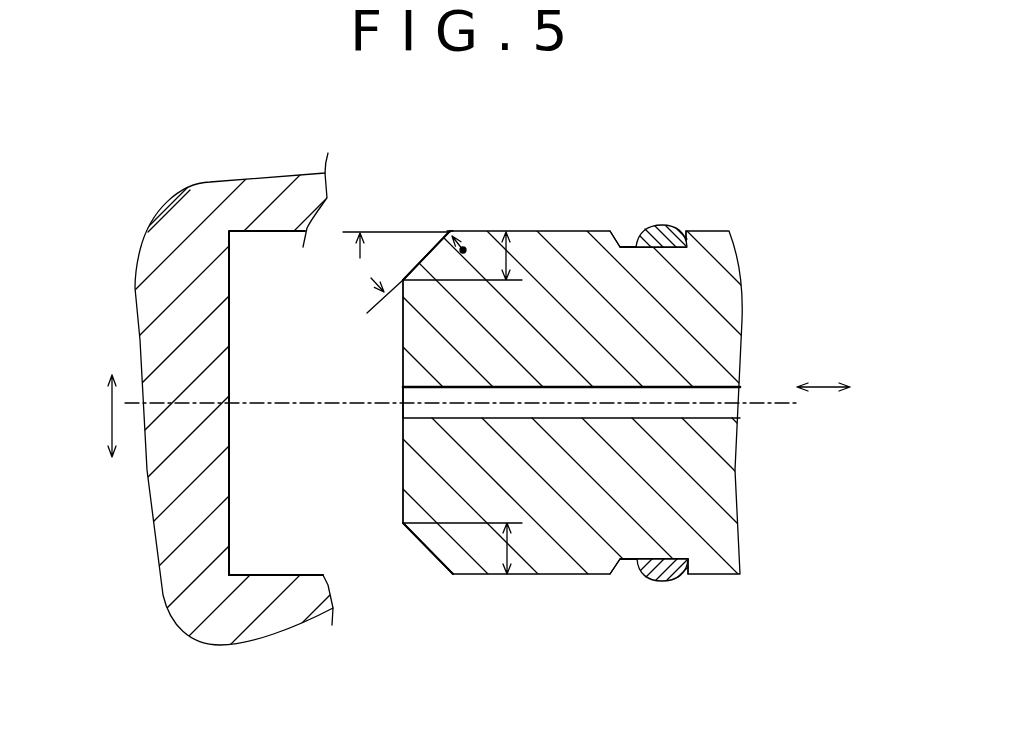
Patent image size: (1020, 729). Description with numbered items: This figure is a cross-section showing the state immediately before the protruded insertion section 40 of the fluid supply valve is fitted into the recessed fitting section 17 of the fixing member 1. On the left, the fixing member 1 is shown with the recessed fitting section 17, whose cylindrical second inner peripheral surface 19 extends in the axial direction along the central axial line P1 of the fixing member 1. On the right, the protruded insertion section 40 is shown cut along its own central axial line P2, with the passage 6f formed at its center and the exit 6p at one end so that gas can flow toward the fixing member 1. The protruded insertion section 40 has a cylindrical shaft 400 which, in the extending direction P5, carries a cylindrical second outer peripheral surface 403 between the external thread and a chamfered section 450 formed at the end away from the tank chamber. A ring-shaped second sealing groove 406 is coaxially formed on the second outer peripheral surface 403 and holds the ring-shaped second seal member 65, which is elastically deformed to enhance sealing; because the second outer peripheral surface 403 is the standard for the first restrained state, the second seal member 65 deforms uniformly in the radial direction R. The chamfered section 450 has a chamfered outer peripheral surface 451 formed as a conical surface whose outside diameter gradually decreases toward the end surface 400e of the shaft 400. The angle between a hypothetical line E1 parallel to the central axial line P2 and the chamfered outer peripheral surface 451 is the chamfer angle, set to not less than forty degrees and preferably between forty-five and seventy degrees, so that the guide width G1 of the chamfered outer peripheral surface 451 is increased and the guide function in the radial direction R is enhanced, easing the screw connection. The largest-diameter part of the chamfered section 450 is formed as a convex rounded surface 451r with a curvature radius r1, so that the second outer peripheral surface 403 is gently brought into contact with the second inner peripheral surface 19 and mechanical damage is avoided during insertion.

The fixing member 1 is at (205, 197).
The recessed fitting section 17 is at (283, 335).
The second inner peripheral surface 19 is at (270, 233).
The protruded insertion section 40 is at (585, 396).
The shaft 400 is at (728, 542).
The end surface 400e is at (403, 507).
The second outer peripheral surface 403 is at (595, 230).
The second sealing groove 406 is at (630, 237).
The second seal member 65 is at (652, 223).
The chamfered section 450 is at (422, 258).
The chamfered outer peripheral surface 451 is at (412, 268).
The convex rounded surface 451r is at (448, 232).
The curvature radius r1 is at (463, 250).
The guide width G1 is at (507, 250).
The hypothetical line E1 is at (381, 231).
The passage 6f is at (713, 396).
The exit 6p is at (423, 393).
The radial direction R is at (105, 415).
The central axial line P1 is at (192, 405).
The central axial line P2 is at (760, 404).
The extending direction P5 is at (821, 387).